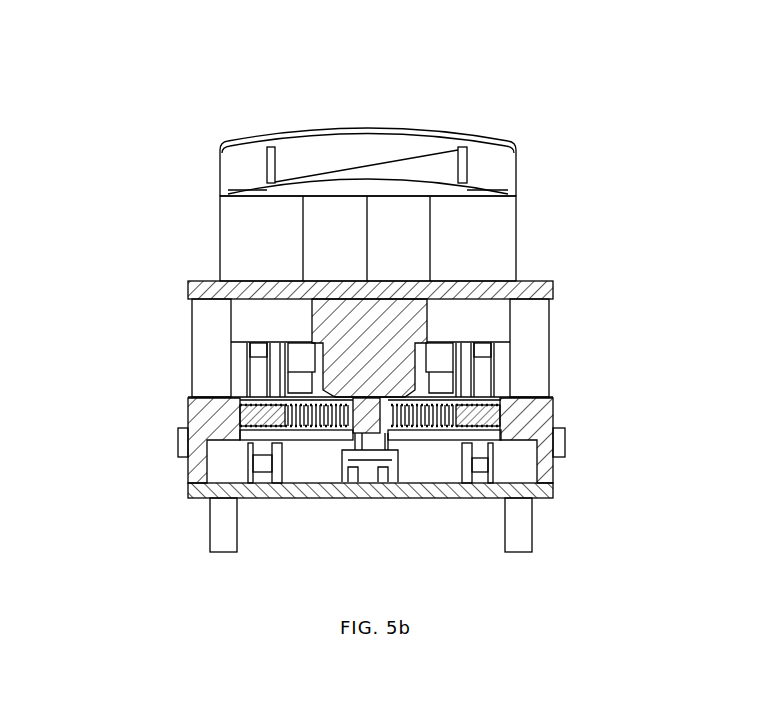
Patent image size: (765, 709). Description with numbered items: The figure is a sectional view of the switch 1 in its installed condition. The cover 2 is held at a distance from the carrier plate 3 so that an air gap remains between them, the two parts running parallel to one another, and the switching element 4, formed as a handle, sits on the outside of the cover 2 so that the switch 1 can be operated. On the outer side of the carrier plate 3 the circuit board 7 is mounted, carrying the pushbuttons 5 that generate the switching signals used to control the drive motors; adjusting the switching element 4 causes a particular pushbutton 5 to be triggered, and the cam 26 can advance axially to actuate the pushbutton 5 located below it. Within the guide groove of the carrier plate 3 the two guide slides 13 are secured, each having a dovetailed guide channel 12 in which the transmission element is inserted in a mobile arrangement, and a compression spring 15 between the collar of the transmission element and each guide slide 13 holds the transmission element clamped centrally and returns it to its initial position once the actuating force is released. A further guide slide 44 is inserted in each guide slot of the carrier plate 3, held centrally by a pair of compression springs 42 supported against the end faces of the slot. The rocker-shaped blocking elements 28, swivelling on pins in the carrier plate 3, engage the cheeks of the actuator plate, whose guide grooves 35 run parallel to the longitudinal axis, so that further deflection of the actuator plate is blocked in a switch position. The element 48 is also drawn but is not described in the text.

The switch 1 is at (520, 92).
The switching element 4 is at (473, 235).
The cover 2 is at (437, 292).
The carrier plate 3 is at (217, 413).
The guide grooves 35 is at (481, 347).
The blocking elements 28 is at (478, 378).
The compression spring 42 is at (370, 408).
The guide channels 12 is at (478, 435).
The compression spring 15 is at (255, 424).
The switching element 48 is at (373, 450).
The guide slide 44 is at (400, 442).
The pushbutton 5 is at (365, 472).
The guide slides 13 is at (420, 473).
The circuit board 7 is at (300, 489).
The cam 26 is at (420, 498).